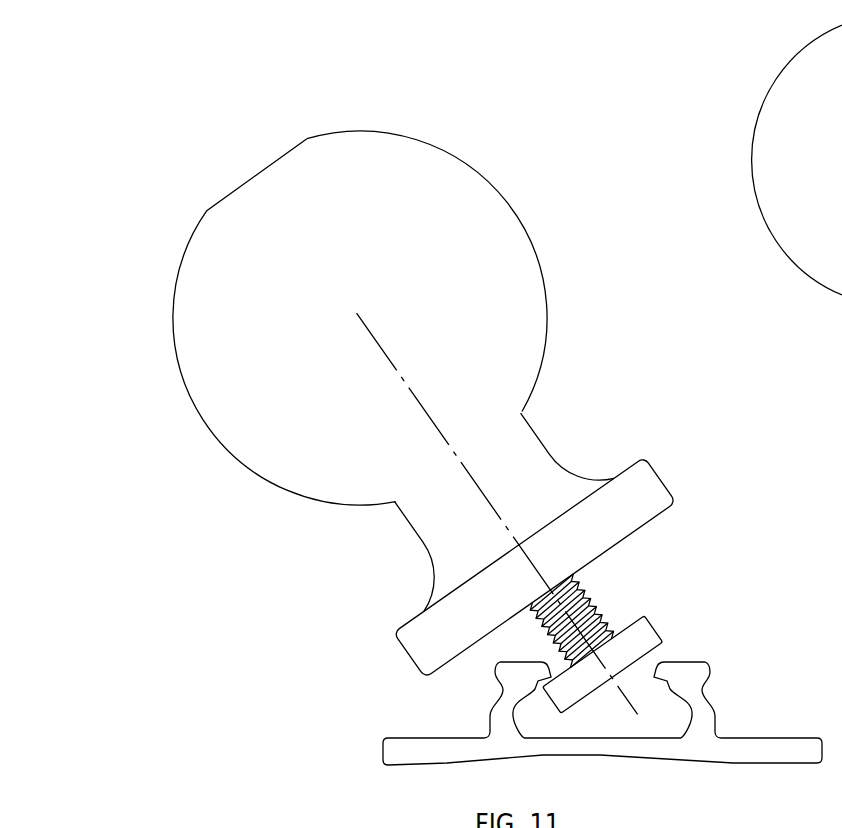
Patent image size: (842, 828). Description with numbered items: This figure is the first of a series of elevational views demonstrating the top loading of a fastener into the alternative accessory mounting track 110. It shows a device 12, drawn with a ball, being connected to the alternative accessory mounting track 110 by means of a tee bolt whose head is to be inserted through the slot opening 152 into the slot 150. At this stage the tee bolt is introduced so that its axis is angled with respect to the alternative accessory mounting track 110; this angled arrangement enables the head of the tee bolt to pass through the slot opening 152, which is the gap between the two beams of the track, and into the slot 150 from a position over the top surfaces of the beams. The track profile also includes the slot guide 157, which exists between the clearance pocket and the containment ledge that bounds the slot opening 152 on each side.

The device 12 is at (273, 260).
The alternative accessory mounting track 110 is at (565, 670).
The slot 150 is at (667, 718).
The slot opening 152 is at (648, 668).
The slot guide 157 is at (530, 688).